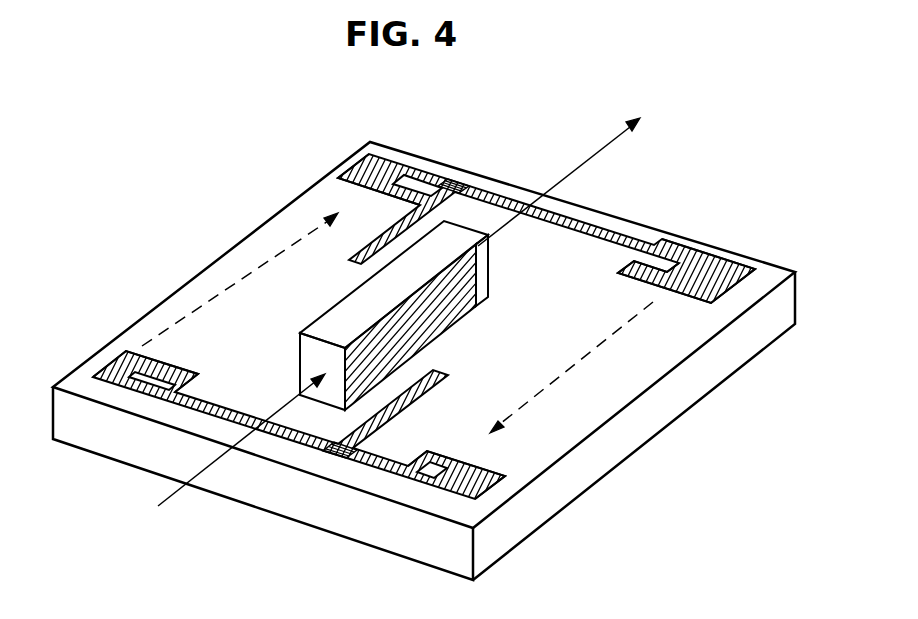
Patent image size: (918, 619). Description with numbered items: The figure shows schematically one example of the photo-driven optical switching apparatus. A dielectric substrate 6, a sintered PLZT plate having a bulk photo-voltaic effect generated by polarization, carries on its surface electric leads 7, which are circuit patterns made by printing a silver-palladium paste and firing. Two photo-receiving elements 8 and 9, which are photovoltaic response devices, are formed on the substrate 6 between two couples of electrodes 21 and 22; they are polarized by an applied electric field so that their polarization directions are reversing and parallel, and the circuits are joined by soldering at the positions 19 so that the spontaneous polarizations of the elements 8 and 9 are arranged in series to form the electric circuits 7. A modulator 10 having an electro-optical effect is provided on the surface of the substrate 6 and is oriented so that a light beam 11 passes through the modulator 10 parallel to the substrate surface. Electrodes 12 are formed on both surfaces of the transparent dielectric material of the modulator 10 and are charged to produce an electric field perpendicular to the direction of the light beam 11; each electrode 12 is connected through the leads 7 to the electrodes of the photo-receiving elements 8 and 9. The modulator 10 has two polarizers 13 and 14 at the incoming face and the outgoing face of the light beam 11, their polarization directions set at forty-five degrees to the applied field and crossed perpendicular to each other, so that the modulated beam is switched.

The dielectric substrate 6 is at (746, 258).
The electric leads 7 is at (602, 220).
The photo-receiving element 8 is at (243, 279).
The photo-receiving element 9 is at (571, 379).
The modulator 10 is at (418, 318).
The light beam 11 is at (402, 313).
The electrodes 12 is at (343, 300).
The polarizer 13 is at (298, 340).
The polarizer 14 is at (488, 262).
The connecting positions 19 is at (455, 186).
The electrodes 21 is at (352, 168).
The electrodes 22 is at (670, 266).